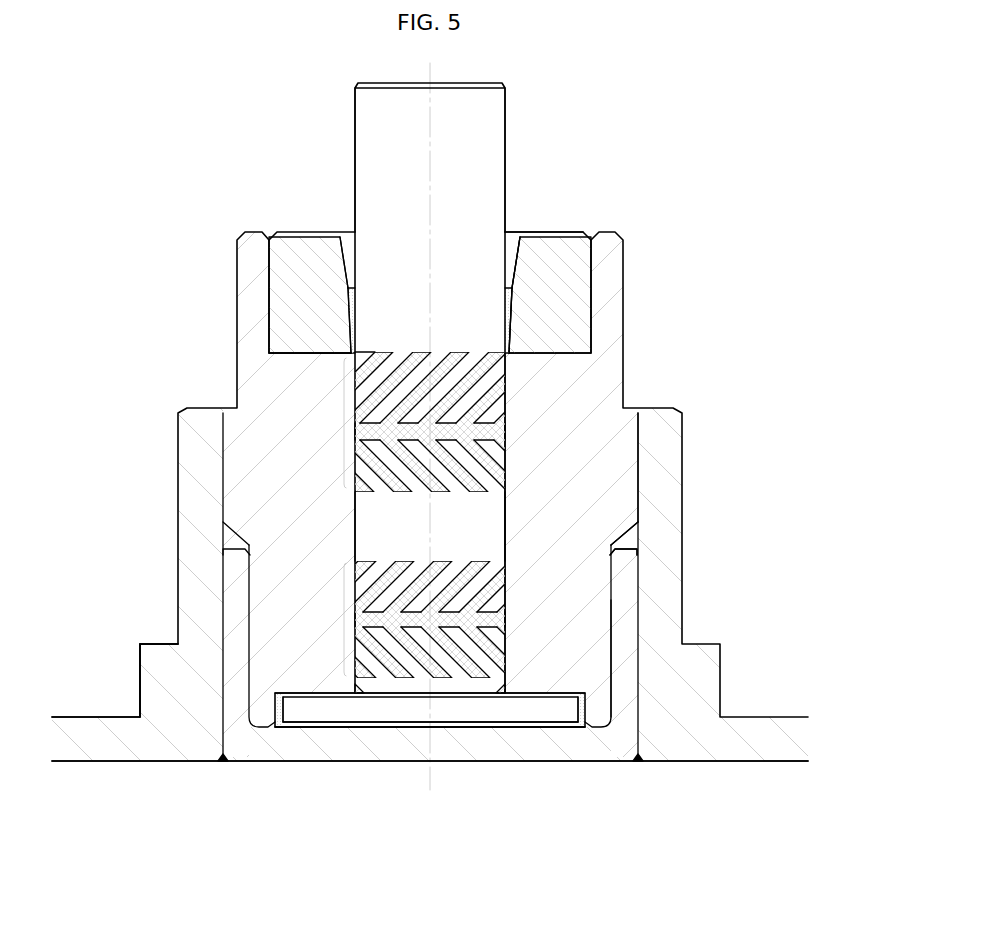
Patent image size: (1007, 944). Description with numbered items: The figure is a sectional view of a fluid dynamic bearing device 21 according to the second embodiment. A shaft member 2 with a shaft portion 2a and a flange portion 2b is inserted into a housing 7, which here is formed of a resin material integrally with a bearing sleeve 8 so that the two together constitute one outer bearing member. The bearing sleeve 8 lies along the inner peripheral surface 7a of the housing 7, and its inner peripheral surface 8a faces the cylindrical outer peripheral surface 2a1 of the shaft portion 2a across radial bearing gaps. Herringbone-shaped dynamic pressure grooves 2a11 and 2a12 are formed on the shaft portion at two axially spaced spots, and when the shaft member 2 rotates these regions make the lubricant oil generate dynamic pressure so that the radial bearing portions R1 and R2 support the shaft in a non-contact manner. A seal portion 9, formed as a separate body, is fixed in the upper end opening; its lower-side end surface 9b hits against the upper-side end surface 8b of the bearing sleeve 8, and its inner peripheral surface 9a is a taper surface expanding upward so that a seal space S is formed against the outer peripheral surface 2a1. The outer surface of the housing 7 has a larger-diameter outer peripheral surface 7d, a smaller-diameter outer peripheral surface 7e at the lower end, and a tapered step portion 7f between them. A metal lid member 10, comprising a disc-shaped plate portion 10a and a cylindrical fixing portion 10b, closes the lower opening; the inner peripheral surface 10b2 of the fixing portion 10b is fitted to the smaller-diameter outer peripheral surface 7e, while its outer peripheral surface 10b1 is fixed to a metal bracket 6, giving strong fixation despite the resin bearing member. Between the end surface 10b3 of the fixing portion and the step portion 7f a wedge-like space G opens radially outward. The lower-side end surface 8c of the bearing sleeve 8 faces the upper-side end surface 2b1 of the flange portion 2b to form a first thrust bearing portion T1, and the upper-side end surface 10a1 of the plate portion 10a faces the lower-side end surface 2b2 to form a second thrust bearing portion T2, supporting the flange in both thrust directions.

The shaft member 2 is at (510, 117).
The shaft portion 2a is at (470, 258).
The outer peripheral surface of the shaft portion 2a1 is at (504, 268).
The dynamic pressure groove 2a11 is at (400, 362).
The dynamic pressure groove 2a12 is at (610, 557).
The flange portion 2b is at (487, 712).
The upper-side end surface of the flange portion 2b1 is at (563, 693).
The lower-side end surface of the flange portion 2b2 is at (553, 728).
The seal space S is at (508, 246).
The bracket 6 is at (761, 754).
The housing 7 is at (608, 321).
The inner peripheral surface of the housing 7a is at (594, 297).
The larger-diameter outer peripheral surface 7d is at (223, 459).
The smaller-diameter outer peripheral surface 7e is at (613, 698).
The step portion 7f is at (233, 541).
The bearing sleeve 8 is at (588, 442).
The inner peripheral surface of the bearing sleeve 8a is at (352, 535).
The upper-side end surface of the bearing sleeve 8b is at (295, 350).
The lower-side end surface of the bearing sleeve 8c is at (338, 705).
The seal portion 9 is at (286, 238).
The inner peripheral surface of the seal portion 9a is at (348, 252).
The lower-side end surface of the seal portion 9b is at (287, 352).
The lid member 10 is at (447, 772).
The plate portion 10a is at (392, 750).
The upper-side end surface of the plate portion 10a1 is at (313, 717).
The fixing portion 10b is at (228, 694).
The outer peripheral surface of the fixing portion 10b1 is at (223, 650).
The inner peripheral surface of the fixing portion 10b2 is at (258, 705).
The end surface of the fixing portion 10b3 is at (228, 547).
The wedge-like space G is at (639, 534).
The radial bearing portion R1 is at (326, 426).
The radial bearing portion R2 is at (328, 624).
The first thrust bearing portion T1 is at (536, 682).
The second thrust bearing portion T2 is at (537, 742).
The fluid dynamic bearing device 21 is at (636, 150).